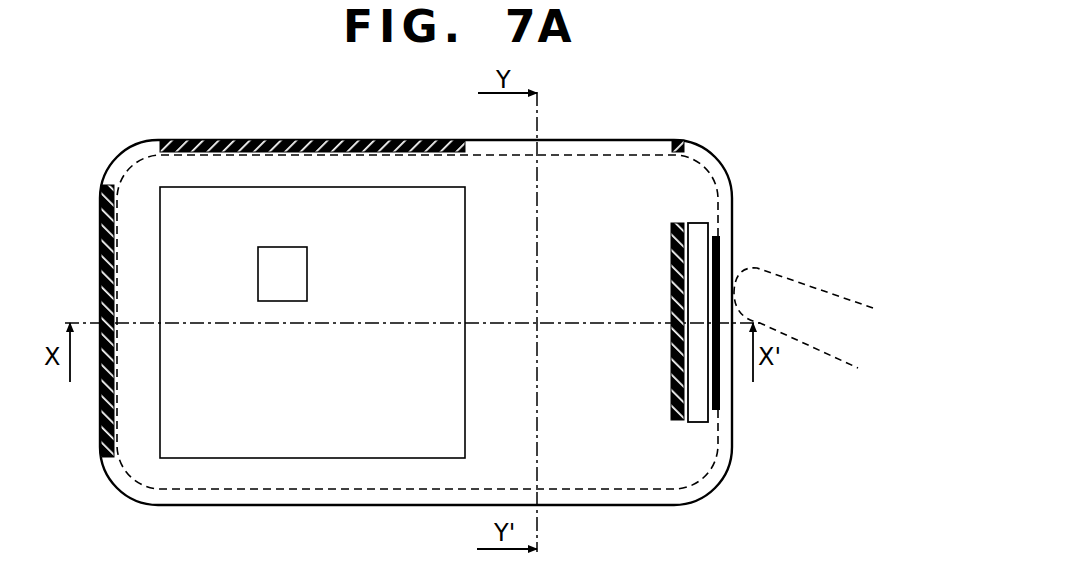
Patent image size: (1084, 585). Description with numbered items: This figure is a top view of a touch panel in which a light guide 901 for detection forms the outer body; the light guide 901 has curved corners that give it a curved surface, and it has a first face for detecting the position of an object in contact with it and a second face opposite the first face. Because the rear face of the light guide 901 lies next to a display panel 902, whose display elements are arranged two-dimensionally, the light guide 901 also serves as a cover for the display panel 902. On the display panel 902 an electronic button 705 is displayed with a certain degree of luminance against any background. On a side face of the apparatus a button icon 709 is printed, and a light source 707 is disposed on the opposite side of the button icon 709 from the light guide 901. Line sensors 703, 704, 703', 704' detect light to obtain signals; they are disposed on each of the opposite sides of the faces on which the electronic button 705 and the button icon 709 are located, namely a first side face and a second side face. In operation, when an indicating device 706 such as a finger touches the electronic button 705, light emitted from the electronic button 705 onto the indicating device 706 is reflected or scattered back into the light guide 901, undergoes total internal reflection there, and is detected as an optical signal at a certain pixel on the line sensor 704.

The light guide 901 is at (121, 157).
The display panel 902 is at (213, 206).
The line sensor 703 is at (69, 321).
The line sensor 703' is at (737, 342).
The line sensor 704 is at (312, 121).
The line sensor 704' is at (688, 121).
The electronic button 705 is at (287, 247).
The indicating device 706 is at (827, 356).
The light source 707 is at (701, 223).
The button icon 709 is at (720, 248).